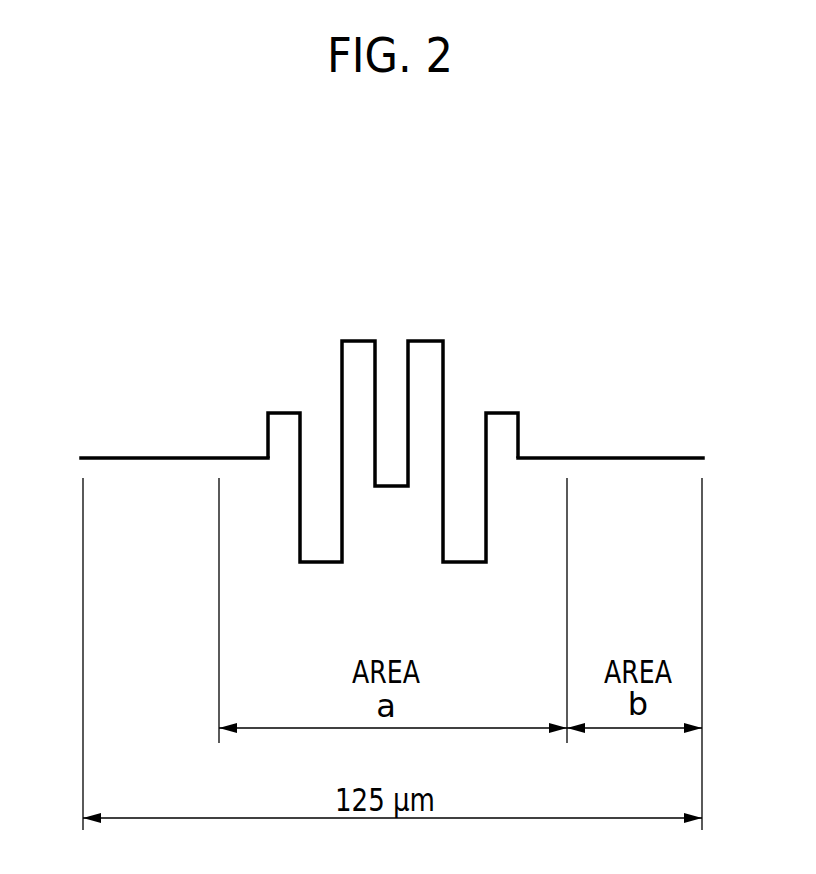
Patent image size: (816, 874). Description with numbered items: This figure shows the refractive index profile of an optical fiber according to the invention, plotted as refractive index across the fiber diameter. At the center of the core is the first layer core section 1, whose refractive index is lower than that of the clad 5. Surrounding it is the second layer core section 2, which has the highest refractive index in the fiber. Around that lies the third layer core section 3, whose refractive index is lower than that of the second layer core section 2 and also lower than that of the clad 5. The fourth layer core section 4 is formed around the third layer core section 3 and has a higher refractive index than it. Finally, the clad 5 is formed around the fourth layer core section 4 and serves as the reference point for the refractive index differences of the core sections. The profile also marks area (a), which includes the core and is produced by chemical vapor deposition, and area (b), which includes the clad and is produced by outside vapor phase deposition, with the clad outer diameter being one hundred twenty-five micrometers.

The first layer core section 1 is at (391, 484).
The second layer core section 2 is at (356, 339).
The third layer core section 3 is at (322, 560).
The fourth layer core section 4 is at (270, 412).
The clad 5 is at (165, 457).